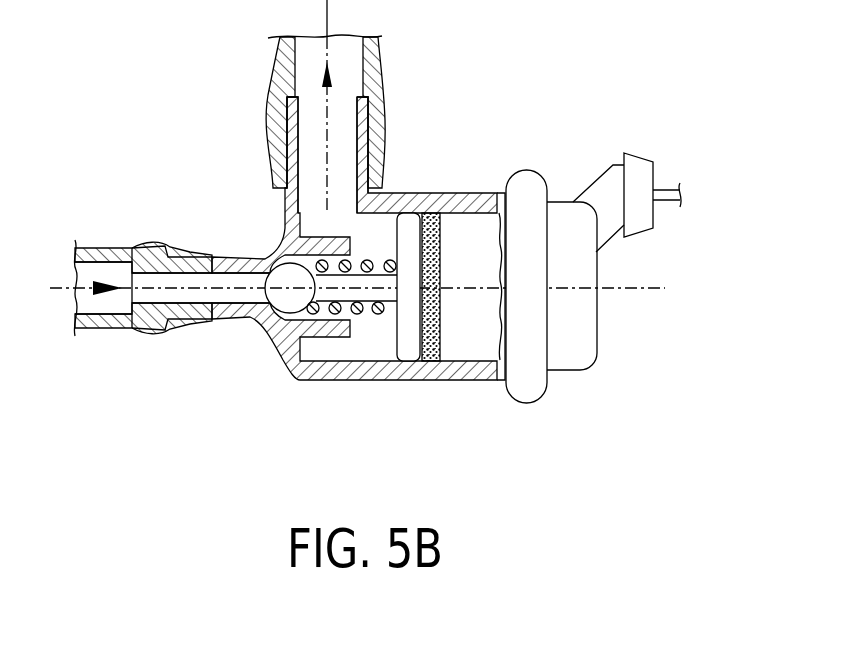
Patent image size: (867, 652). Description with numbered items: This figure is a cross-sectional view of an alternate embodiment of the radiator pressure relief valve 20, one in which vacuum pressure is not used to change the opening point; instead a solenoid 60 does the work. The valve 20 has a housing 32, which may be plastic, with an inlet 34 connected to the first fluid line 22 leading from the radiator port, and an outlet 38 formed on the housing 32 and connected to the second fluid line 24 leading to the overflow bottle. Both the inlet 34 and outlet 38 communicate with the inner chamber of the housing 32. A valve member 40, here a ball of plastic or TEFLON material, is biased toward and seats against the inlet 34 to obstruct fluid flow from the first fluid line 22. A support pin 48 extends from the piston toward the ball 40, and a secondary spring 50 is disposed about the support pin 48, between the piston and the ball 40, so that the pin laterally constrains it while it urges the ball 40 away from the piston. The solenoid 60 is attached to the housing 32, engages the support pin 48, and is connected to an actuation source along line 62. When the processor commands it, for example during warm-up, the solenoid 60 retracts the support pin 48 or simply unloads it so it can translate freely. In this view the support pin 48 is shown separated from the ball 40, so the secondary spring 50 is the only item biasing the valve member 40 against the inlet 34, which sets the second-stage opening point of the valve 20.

The pressure relief valve 20 is at (520, 62).
The first fluid line 22 is at (122, 327).
The second fluid line 24 is at (373, 45).
The housing 32 is at (413, 195).
The inlet 34 is at (230, 262).
The outlet 38 is at (380, 102).
The valve member 40 is at (255, 316).
The support pin 48 is at (377, 280).
The secondary spring 50 is at (390, 310).
The solenoid 60 is at (577, 335).
The line 62 is at (672, 200).